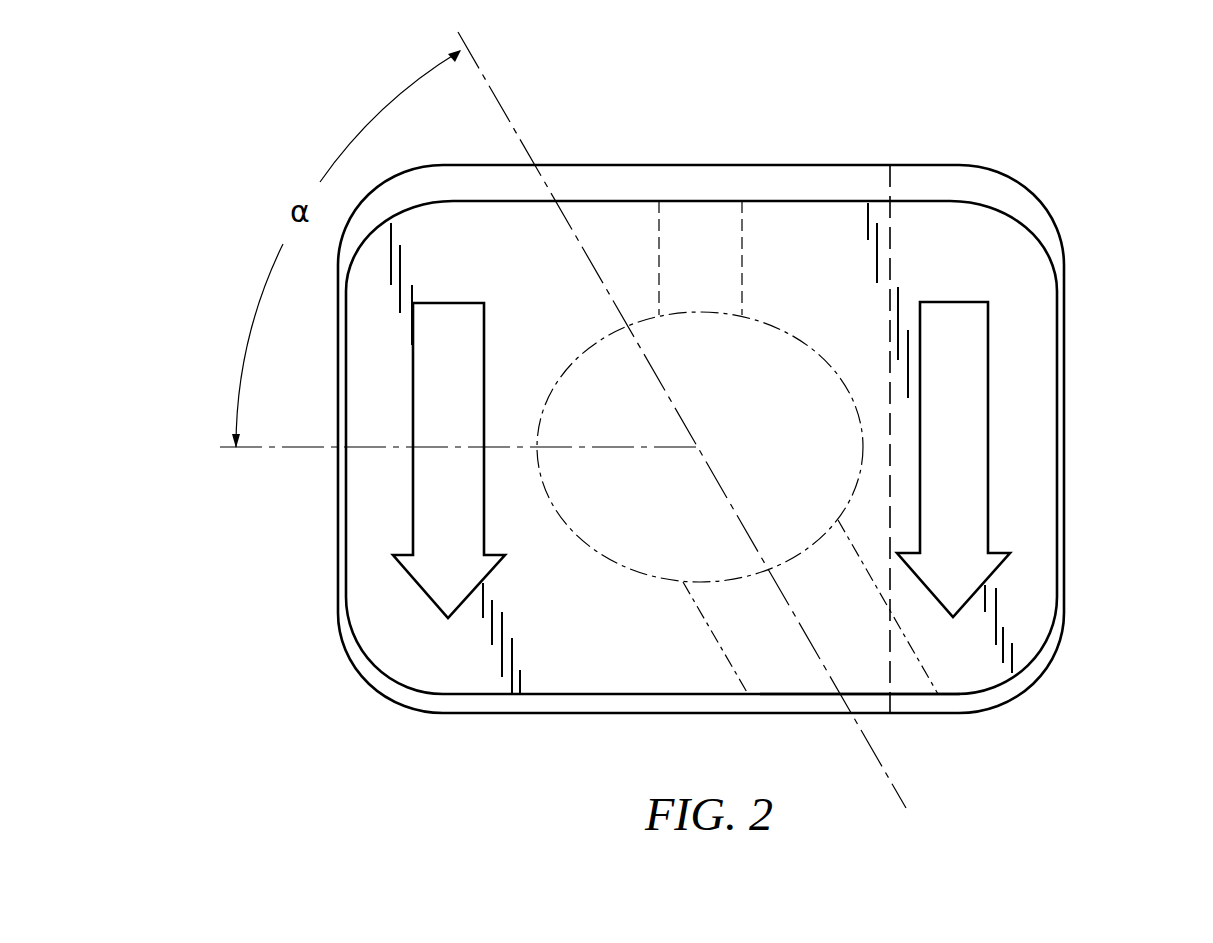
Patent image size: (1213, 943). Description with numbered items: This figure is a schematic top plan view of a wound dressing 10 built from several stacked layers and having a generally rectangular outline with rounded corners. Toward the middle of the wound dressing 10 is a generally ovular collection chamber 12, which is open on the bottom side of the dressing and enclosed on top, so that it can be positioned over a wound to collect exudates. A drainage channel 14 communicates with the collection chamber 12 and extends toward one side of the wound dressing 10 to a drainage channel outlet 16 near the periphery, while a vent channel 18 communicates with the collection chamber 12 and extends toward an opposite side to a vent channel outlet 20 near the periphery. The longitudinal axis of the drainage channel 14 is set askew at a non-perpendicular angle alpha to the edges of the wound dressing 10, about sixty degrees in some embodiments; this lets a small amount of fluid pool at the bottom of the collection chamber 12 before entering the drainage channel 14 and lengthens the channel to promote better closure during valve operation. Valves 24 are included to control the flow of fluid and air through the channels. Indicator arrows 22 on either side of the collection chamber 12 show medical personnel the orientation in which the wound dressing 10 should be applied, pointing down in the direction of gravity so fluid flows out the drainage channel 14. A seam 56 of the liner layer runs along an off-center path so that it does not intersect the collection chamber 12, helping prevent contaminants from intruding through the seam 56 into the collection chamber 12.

The wound dressing 10 is at (1108, 88).
The collection chamber 12 is at (727, 355).
The drainage channel 14 is at (873, 652).
The drainage channel outlet 16 is at (867, 704).
The vent channel 18 is at (706, 250).
The vent channel outlet 20 is at (694, 192).
The indicator arrows 22 is at (447, 531).
The valves 24 is at (668, 200).
The seam 56 is at (890, 200).